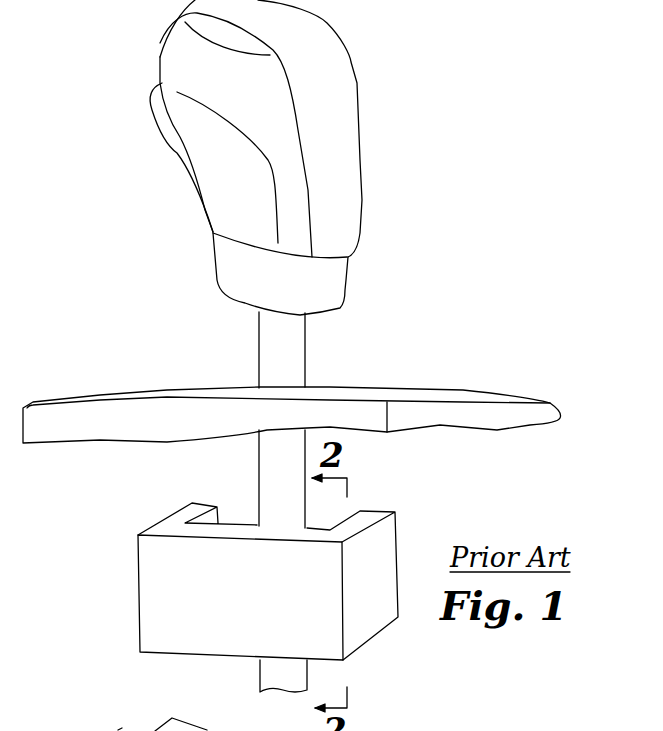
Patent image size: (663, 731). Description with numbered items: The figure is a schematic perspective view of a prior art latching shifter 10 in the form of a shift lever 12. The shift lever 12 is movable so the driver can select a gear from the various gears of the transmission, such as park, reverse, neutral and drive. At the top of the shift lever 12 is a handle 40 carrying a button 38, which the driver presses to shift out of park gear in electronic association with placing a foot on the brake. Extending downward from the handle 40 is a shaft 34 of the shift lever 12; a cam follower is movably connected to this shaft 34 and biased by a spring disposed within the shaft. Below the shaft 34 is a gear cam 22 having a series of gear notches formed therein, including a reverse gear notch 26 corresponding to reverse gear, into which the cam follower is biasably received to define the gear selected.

The latching shifter 10 is at (292, 365).
The shift lever 12 is at (277, 157).
The handle 40 is at (358, 110).
The button 38 is at (173, 142).
The shaft 34 is at (305, 340).
The gear cam 22 is at (417, 550).
The reverse gear notch 26 is at (466, 729).